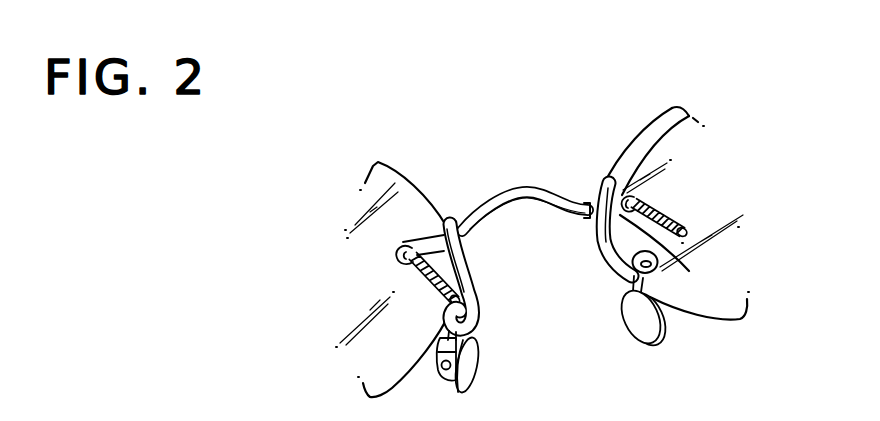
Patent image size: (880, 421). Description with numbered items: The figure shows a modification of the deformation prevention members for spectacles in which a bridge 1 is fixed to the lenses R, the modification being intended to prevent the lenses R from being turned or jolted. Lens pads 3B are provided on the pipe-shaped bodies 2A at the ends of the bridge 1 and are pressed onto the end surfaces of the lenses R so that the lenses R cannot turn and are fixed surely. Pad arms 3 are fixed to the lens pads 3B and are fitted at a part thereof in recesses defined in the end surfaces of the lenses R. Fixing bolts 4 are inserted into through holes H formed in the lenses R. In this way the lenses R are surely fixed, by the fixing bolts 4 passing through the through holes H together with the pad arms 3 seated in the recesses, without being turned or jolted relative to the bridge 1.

The bridge 1 is at (503, 193).
The lenses R is at (659, 128).
The through holes H is at (639, 204).
The fixing bolts 4 is at (668, 221).
The pipe-shaped bodies 2A is at (684, 240).
The lens pads 3B is at (593, 233).
The pad arms 3 is at (610, 283).